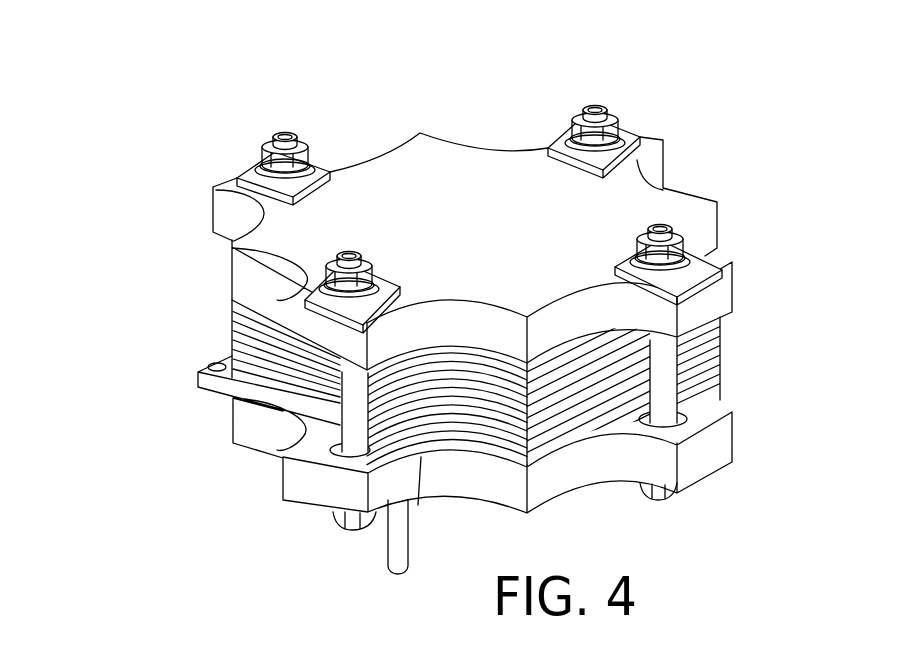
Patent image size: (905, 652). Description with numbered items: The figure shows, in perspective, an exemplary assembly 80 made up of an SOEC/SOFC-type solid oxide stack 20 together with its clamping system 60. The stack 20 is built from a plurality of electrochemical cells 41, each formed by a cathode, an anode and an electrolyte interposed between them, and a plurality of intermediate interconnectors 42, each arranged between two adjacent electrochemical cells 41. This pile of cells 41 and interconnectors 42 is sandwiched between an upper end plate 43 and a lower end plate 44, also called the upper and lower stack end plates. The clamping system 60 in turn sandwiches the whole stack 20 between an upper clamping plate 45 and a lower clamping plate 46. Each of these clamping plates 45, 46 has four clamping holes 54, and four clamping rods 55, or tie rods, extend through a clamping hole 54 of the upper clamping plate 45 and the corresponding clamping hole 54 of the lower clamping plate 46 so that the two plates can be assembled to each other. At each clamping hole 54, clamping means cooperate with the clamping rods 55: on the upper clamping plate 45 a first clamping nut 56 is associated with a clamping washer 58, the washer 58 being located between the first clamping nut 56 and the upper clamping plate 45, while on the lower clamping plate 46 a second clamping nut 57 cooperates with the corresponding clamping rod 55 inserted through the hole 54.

The assembly 80 is at (174, 97).
The clamping system 60 is at (748, 164).
The SOEC/SOFC-type solid oxide stack 20 is at (155, 296).
The electrochemical cell 41 is at (230, 320).
The intermediate interconnector 42 is at (222, 354).
The upper end plate 43 is at (234, 302).
The lower end plate 44 is at (220, 386).
The upper clamping plate 45 is at (230, 208).
The lower clamping plate 46 is at (320, 488).
The clamping hole 54 is at (418, 505).
The clamping rod 55 is at (297, 412).
The first clamping nut 56 is at (278, 150).
The second clamping nut 57 is at (350, 524).
The clamping washer 58 is at (260, 168).